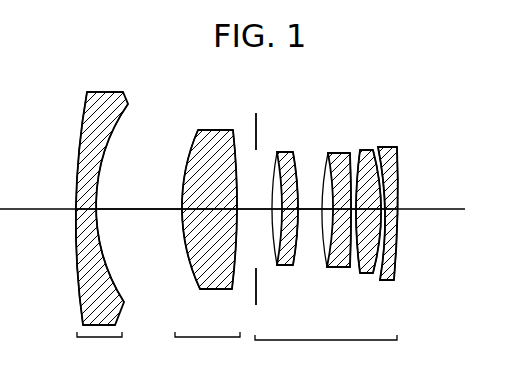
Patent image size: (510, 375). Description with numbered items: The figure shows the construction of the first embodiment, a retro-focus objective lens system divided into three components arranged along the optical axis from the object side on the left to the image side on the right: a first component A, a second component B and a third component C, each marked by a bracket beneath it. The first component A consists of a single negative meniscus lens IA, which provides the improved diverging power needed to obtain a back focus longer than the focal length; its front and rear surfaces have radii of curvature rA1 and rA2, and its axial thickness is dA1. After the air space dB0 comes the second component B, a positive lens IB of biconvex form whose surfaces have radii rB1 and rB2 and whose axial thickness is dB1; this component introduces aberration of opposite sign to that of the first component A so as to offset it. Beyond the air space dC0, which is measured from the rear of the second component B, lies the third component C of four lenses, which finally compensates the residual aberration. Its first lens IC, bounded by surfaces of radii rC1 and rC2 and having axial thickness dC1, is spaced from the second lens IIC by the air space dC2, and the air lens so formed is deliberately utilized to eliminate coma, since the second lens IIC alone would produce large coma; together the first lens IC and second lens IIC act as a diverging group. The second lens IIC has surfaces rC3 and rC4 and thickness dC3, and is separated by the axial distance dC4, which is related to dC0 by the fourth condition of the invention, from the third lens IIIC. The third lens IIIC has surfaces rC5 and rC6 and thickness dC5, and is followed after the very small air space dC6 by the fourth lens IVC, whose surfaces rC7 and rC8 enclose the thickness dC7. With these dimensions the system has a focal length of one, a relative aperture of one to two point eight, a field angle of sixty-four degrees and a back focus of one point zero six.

The first component A is at (112, 223).
The second component B is at (201, 235).
The third component C is at (335, 236).
The negative meniscus lens IA is at (82, 306).
The positive lens of group B IB is at (207, 290).
The first lens of the third component IC is at (288, 270).
The second lens of the third component IIC is at (337, 272).
The third lens of the third component IIIC is at (364, 276).
The fourth lens of group C IVC is at (387, 282).
The radius of curvature of the first surface of the first component rA1 is at (78, 130).
The radius of curvature of the second surface of the first component rA2 is at (125, 113).
The axial thickness of the first component lens dA1 is at (92, 203).
The axial distance between first and second components dB0 is at (137, 200).
The radius of curvature of the first surface of the second component rB1 is at (196, 142).
The radius of curvature of the second surface of the second component rB2 is at (238, 146).
The axial thickness of the second component lens dB1 is at (209, 202).
The axial thickness of the first lens of the third component dC1 is at (254, 187).
The axial distance between second and third components dC0 is at (261, 199).
The radius of curvature of the first surface of the third component rC1 is at (287, 146).
The radius of curvature of the second surface of the third component rC2 is at (296, 151).
The axial air space between first and second lenses of the third component dC2 is at (306, 224).
The axial thickness of the second lens of the third component dC3 is at (315, 192).
The radius of curvature of the third surface of the third component rC3 is at (337, 147).
The radius of curvature of the fourth surface of the third component rC4 is at (352, 152).
The axial distance between second and third lenses of the third component dC4 is at (392, 280).
The radius of curvature of the fifth surface of the third component rC5 is at (374, 147).
The radius of curvature of the sixth surface of the third component rC6 is at (375, 150).
The axial thickness of the third lens of the third component dC5 is at (394, 187).
The axial distance between third and fourth lenses of the third component dC6 is at (407, 232).
The radius of curvature of the seventh surface of the third component rC7 is at (384, 150).
The radius of curvature of the eighth surface of the third component rC8 is at (397, 146).
The axial thickness of the fourth lens of the third component dC7 is at (409, 200).